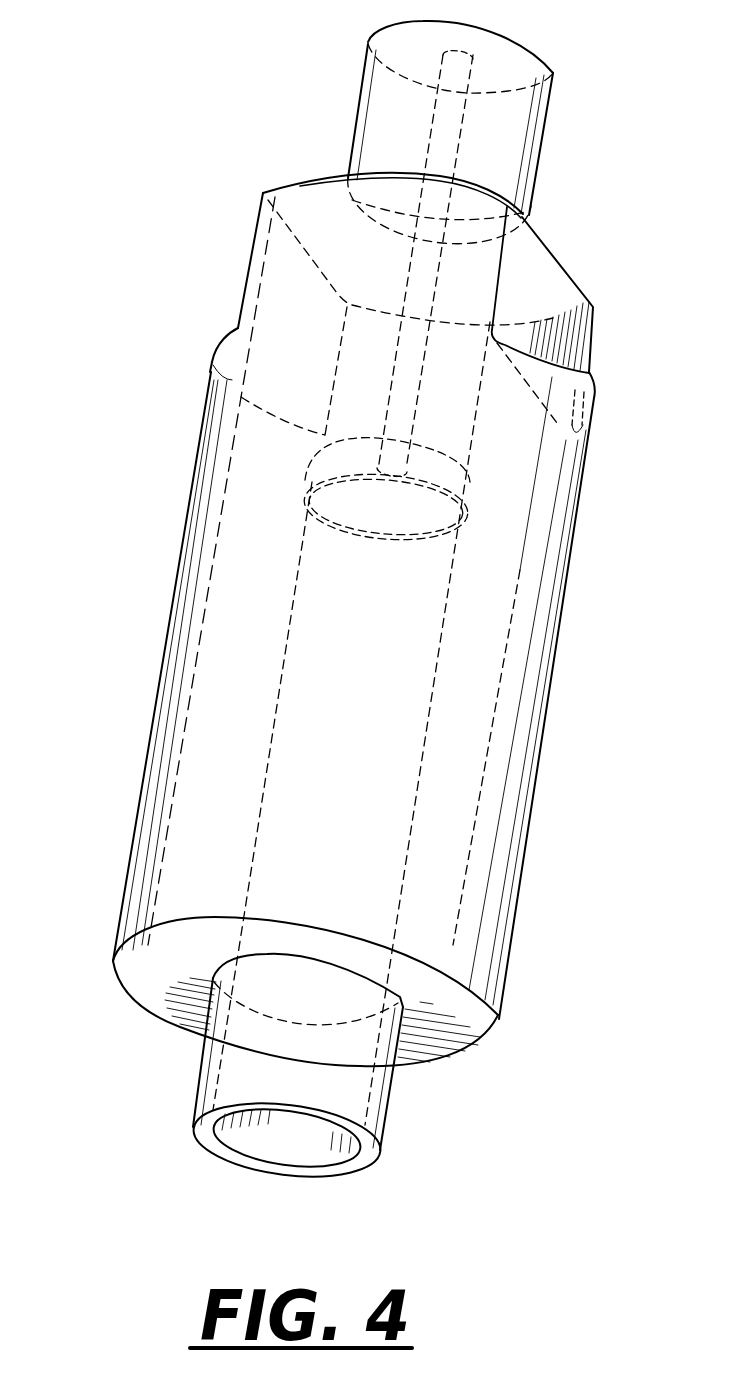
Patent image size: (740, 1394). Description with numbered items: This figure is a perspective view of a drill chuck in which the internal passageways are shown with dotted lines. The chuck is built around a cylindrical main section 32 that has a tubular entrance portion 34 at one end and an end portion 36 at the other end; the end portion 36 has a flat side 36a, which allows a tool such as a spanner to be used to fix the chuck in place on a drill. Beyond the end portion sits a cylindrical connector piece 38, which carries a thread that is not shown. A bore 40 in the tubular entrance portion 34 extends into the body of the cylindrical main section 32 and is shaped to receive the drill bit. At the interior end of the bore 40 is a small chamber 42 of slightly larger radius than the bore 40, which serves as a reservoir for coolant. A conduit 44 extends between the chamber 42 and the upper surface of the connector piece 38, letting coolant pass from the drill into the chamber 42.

The cylindrical main section 32 is at (190, 678).
The tubular entrance portion 34 is at (200, 1068).
The end portion 36 is at (293, 200).
The flat side 36a is at (268, 290).
The cylindrical connector piece 38 is at (548, 145).
The bore 40 is at (290, 877).
The chamber 42 is at (300, 478).
The conduit 44 is at (432, 125).